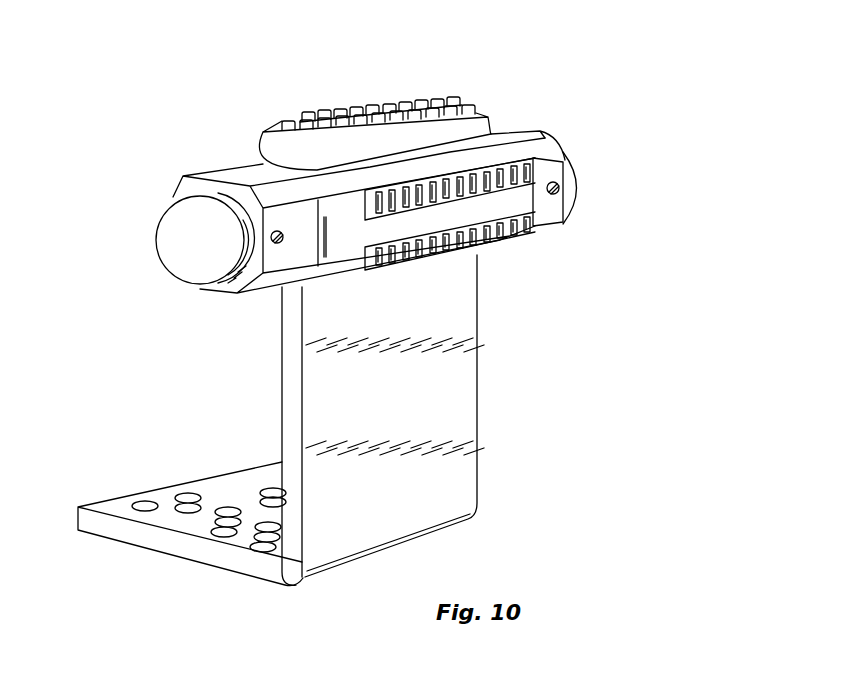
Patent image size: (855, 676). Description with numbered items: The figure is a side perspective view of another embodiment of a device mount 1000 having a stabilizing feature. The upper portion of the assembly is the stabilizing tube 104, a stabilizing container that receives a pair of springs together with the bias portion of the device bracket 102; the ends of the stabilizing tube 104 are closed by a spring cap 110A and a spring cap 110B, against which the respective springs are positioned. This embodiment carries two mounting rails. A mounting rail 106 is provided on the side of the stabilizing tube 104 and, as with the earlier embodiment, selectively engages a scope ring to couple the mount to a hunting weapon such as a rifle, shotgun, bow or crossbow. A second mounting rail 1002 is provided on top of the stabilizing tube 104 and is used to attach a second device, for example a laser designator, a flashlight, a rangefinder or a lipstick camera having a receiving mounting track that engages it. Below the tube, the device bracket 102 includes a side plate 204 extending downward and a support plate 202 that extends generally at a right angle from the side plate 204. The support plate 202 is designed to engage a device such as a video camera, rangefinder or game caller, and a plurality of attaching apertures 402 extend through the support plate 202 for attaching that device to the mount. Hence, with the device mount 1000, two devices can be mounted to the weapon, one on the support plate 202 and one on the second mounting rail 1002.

The device mount 1000 is at (619, 63).
The second mounting rail 1002 is at (489, 126).
The stabilizing tube 104 is at (506, 134).
The spring cap 110A is at (168, 233).
The spring cap 110B is at (580, 183).
The mounting rail 106 is at (522, 228).
The device bracket 102 is at (201, 558).
The support plate 202 is at (120, 495).
The side plate 204 is at (448, 384).
The attaching apertures 402 is at (187, 493).